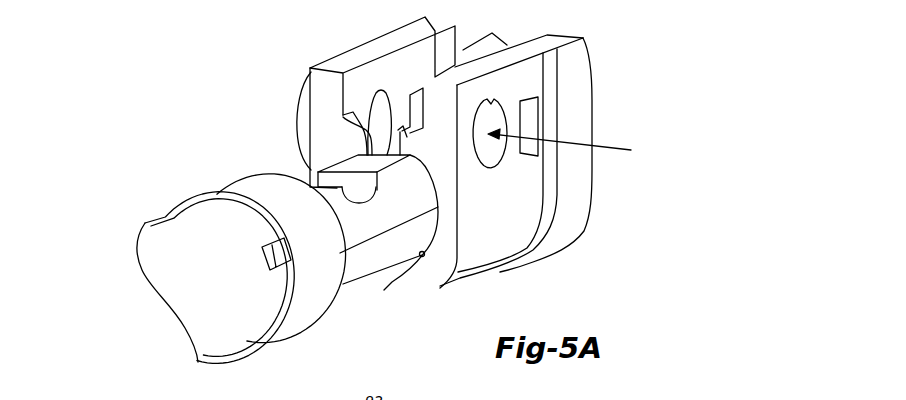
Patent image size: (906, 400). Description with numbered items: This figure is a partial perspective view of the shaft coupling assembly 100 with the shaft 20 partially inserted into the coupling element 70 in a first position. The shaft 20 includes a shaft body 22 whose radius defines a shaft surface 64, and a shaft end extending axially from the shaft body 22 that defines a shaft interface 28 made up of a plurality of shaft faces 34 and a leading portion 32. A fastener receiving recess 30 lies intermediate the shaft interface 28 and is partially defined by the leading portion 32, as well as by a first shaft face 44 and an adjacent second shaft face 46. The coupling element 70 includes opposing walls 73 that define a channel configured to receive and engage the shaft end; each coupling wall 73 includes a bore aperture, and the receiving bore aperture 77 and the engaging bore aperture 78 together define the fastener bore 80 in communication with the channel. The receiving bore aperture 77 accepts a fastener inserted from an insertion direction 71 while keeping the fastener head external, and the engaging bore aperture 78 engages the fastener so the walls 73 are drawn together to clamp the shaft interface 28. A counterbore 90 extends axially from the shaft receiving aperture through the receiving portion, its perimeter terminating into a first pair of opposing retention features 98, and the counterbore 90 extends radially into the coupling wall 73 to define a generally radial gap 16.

The shaft coupling assembly 100 is at (138, 142).
The shaft 20 is at (112, 240).
The shaft body 22 is at (238, 175).
The shaft surface 64 is at (276, 182).
The second shaft face 46 is at (310, 160).
The leading portion 32 is at (353, 156).
The fastener receiving recess 30 is at (350, 187).
The radial gap 16 is at (407, 263).
The shaft faces 34 is at (352, 270).
The shaft interface 28 is at (417, 236).
The counterbore 90 is at (425, 256).
The first shaft face 44 is at (417, 190).
The insertion direction 71 is at (631, 150).
The receiving bore aperture 77 is at (491, 102).
The fastener bore 80 is at (487, 147).
The coupling element 70 is at (599, 66).
The coupling wall 73 is at (379, 49).
The retention features 98 is at (358, 118).
The engaging bore aperture 78 is at (385, 95).